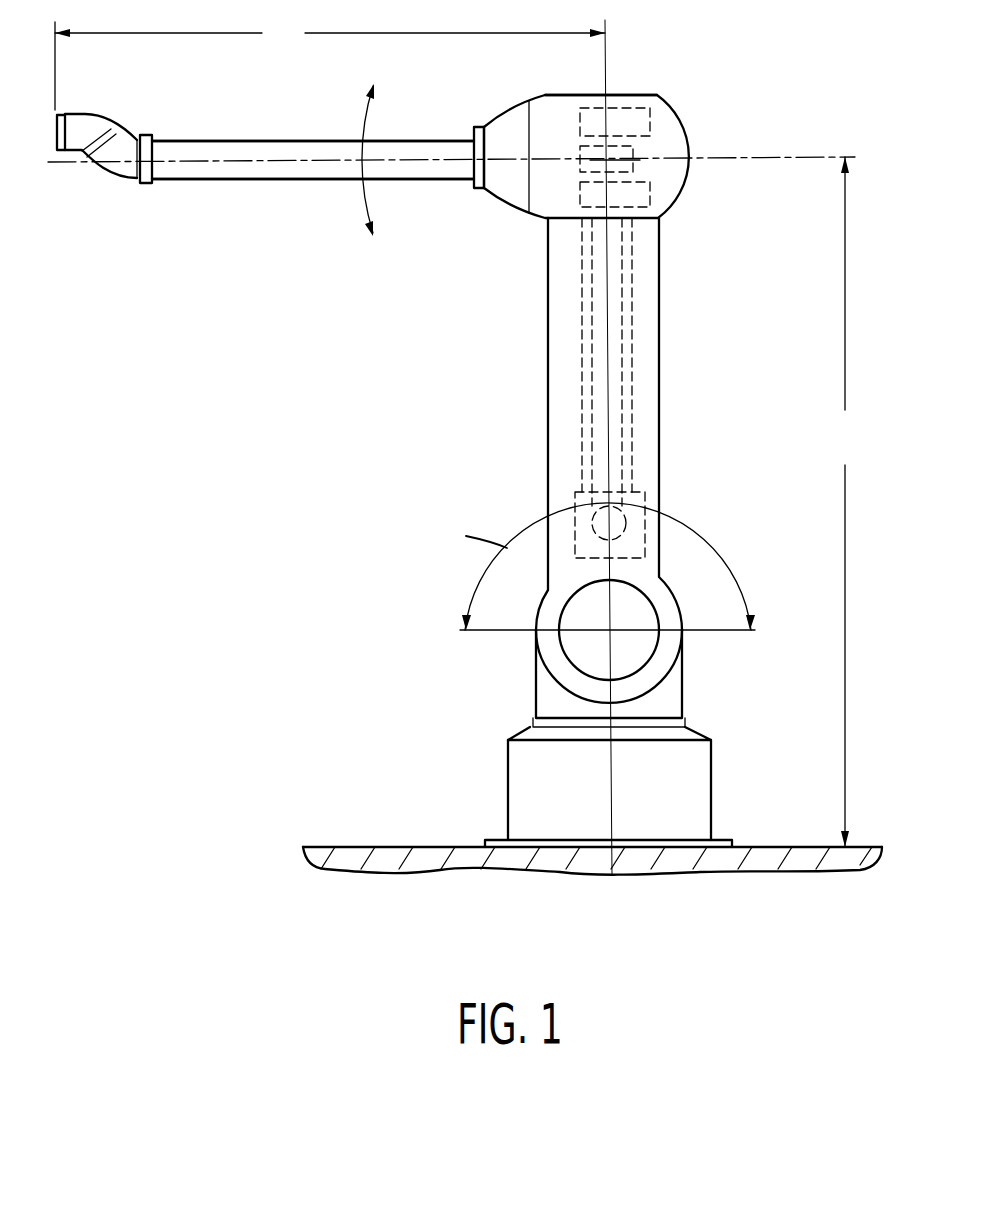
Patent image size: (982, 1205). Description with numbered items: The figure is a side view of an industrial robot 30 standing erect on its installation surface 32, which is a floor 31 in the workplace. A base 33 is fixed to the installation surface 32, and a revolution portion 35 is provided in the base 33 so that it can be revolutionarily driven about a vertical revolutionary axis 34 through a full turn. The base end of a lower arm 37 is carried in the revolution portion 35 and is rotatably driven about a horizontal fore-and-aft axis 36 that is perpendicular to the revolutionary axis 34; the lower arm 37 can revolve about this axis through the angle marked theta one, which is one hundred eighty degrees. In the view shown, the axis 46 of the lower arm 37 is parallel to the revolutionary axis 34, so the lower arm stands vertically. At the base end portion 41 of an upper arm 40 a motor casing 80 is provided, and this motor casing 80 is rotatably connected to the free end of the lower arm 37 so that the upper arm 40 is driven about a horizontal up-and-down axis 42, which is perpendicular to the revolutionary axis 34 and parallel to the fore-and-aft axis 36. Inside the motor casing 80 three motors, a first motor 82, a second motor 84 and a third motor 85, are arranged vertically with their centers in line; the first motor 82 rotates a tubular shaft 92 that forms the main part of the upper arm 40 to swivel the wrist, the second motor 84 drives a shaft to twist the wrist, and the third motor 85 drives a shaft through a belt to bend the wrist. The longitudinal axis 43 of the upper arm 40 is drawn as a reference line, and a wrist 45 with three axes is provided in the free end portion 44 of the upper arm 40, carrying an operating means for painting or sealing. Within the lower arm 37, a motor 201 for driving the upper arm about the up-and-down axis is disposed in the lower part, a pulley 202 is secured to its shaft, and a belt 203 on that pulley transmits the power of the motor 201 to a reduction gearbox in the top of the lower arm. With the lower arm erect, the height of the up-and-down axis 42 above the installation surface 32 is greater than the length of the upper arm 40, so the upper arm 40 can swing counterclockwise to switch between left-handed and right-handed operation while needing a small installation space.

The industrial robot 30 is at (465, 437).
The floor 31 is at (352, 857).
The installation surface 32 is at (493, 855).
The base 33 is at (525, 773).
The revolutionary axis 34 is at (612, 707).
The revolution portion 35 is at (535, 690).
The fore-and-aft axis 36 is at (610, 632).
The lower arm 37 is at (647, 415).
The upper arm 40 is at (282, 182).
The tubular shaft 92 is at (313, 198).
The base end portion of the upper arm 41 is at (513, 188).
The up-and-down axis 42 is at (610, 161).
The longitudinal axis of the upper arm 43 is at (417, 159).
The free end portion of the upper arm 44 is at (197, 171).
The wrist 45 is at (117, 170).
The axis of the lower arm 46 is at (607, 377).
The motor casing 80 is at (630, 95).
The first motor 82 is at (652, 127).
The second motor 84 is at (638, 157).
The third motor 85 is at (667, 213).
The motor 201 is at (663, 547).
The pulley 202 is at (658, 512).
The belt 203 is at (583, 443).